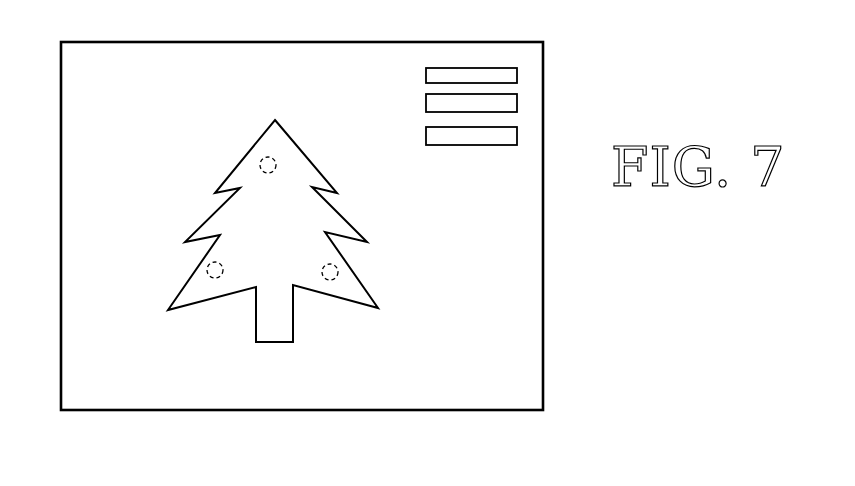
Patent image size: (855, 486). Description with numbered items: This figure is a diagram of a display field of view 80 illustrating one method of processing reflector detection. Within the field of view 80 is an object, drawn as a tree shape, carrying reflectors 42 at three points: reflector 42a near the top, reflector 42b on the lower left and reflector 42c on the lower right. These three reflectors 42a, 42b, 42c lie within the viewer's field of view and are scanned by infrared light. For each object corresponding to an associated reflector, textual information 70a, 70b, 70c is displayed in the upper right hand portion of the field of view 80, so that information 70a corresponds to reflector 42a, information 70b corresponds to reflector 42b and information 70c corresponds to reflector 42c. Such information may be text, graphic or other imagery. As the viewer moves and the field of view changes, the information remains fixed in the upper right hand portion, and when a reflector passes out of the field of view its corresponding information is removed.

The field of view 80 is at (543, 273).
The reflector 42 is at (273, 231).
The reflector 42a is at (275, 158).
The reflector 42b is at (207, 268).
The reflector 42c is at (338, 268).
The textual information 70a is at (517, 75).
The textual information 70b is at (517, 101).
The textual information 70c is at (517, 134).